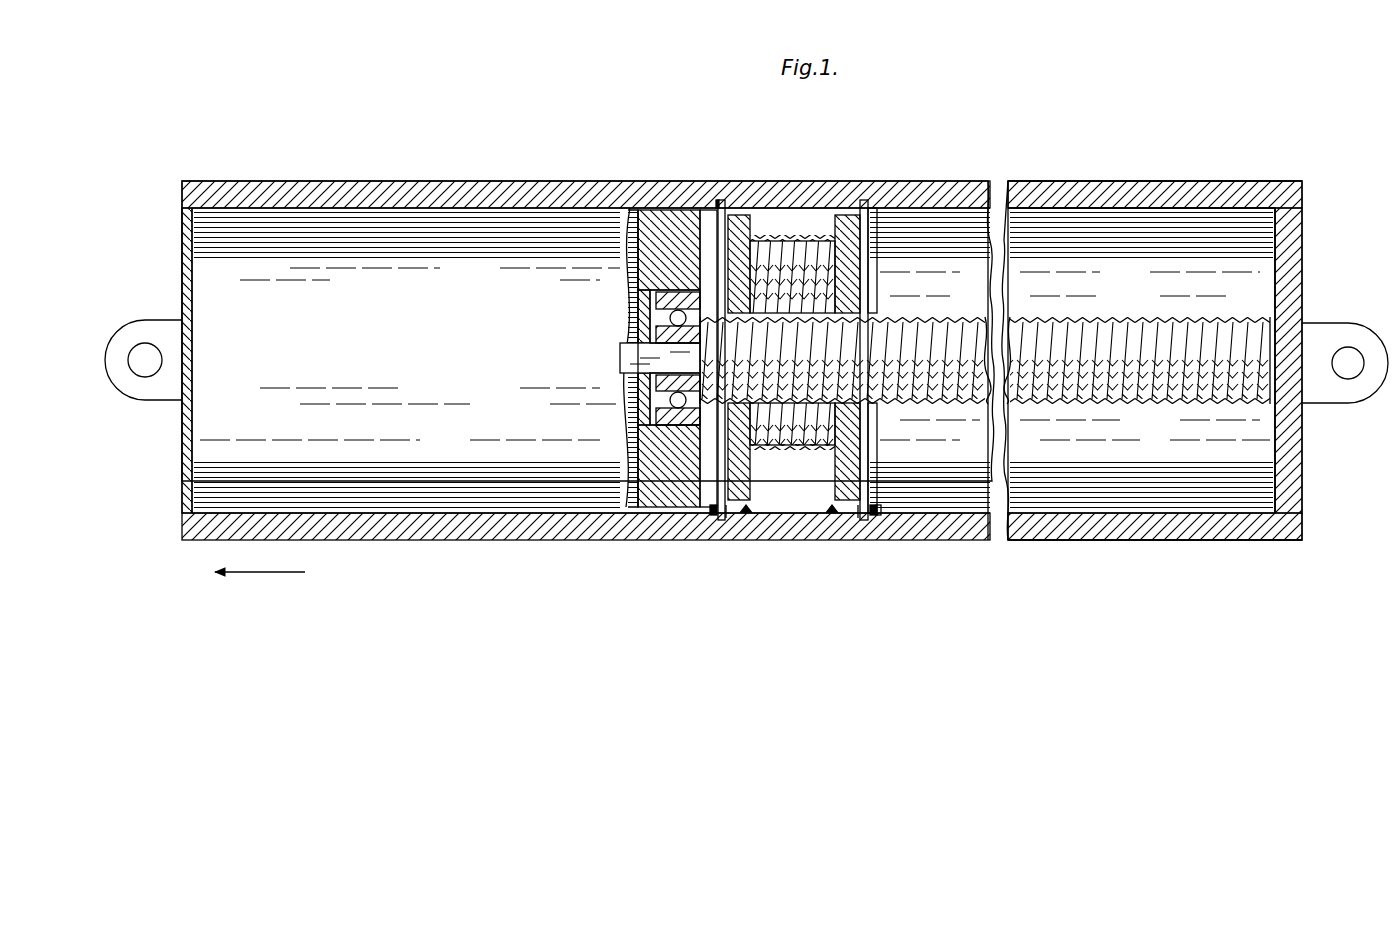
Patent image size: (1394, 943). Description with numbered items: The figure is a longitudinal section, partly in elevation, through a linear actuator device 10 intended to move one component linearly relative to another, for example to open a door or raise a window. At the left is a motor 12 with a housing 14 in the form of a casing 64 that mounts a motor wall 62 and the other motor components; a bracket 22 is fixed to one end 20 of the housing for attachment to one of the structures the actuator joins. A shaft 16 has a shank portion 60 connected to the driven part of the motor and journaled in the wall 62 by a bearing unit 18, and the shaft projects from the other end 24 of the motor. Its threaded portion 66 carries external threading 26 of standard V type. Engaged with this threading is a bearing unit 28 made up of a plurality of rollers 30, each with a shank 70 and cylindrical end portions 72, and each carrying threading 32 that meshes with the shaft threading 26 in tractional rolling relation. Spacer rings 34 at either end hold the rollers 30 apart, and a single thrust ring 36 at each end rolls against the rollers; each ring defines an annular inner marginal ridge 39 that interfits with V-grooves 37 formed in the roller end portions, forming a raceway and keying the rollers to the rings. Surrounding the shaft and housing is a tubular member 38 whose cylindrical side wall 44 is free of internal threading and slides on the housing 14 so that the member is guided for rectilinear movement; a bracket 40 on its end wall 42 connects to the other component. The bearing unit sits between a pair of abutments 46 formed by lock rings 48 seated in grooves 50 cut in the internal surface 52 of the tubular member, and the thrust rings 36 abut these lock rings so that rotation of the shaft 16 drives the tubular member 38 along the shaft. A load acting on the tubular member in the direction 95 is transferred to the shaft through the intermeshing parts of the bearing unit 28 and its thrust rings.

The linear actuator device 10 is at (1122, 168).
The motor 12 is at (462, 226).
The housing 14 is at (365, 240).
The shaft 16 is at (1252, 316).
The bearing unit 18 is at (646, 394).
The one end 20 is at (190, 278).
The bracket 22 is at (152, 400).
The other end 24 is at (702, 507).
The external threading 26 is at (1130, 406).
The bearing unit 28 is at (660, 318).
The rollers 30 is at (793, 238).
The roller threading 32 is at (760, 210).
The spacer rings 34 is at (752, 512).
The thrust rings 36 is at (731, 515).
The V-grooves 37 is at (877, 270).
The tubular member 38 is at (1264, 184).
The annular inner marginal ridge 39 is at (877, 460).
The bracket 40 is at (1345, 403).
The end wall 42 is at (1300, 488).
The cylindrical side wall 44 is at (1060, 540).
The abutments 46 is at (706, 194).
The lock rings 48 is at (710, 518).
The grooves 50 is at (722, 205).
The internal surface 52 is at (1064, 220).
The shank portion 60 is at (640, 370).
The motor wall 62 is at (655, 492).
The casing 64 is at (668, 505).
The threaded portion 66 is at (1113, 345).
The shank 70 is at (826, 215).
The cylindrical end portions 72 is at (998, 205).
The direction 95 is at (255, 578).